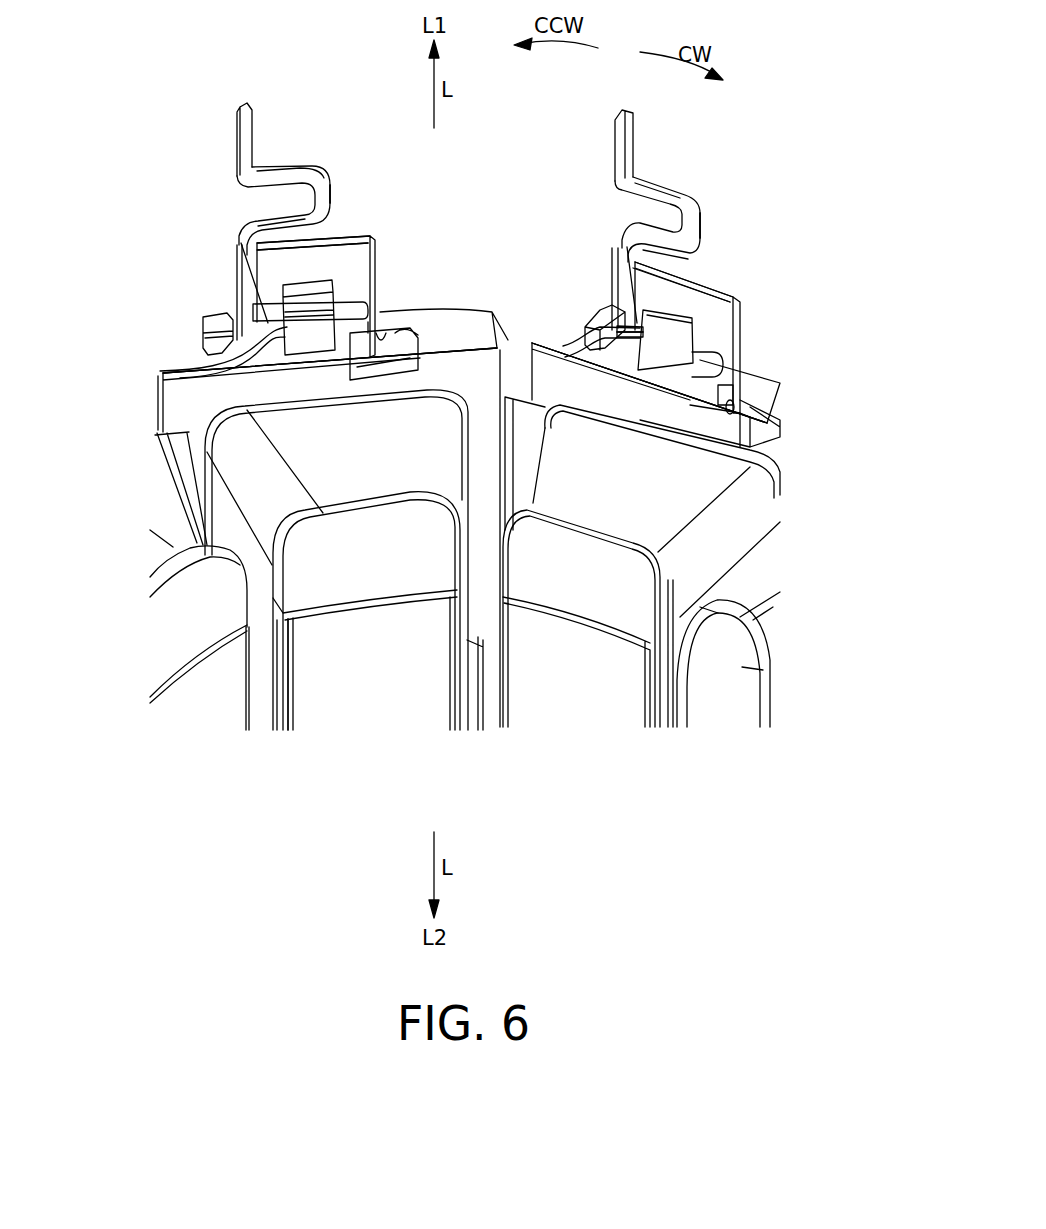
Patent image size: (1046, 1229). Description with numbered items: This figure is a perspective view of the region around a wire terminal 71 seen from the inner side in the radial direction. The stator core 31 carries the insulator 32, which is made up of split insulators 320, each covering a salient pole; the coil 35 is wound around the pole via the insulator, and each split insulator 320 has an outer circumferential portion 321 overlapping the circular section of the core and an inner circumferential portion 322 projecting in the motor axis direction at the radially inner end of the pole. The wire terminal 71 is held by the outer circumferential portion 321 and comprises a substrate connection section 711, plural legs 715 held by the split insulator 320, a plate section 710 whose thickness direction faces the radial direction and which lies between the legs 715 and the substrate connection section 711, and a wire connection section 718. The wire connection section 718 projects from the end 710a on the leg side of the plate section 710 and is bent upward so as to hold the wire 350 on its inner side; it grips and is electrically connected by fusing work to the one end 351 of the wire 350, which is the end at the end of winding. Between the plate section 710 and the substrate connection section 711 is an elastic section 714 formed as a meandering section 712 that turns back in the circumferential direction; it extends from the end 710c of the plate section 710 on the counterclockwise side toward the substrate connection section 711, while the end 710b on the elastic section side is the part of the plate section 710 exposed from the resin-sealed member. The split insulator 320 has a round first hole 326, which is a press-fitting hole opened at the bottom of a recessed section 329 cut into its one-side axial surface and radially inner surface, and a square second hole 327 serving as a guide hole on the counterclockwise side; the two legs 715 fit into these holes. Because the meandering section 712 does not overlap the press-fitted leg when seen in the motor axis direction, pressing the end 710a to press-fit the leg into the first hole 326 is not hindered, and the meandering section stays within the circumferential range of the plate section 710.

The substrate connection section 711 is at (242, 132).
The elastic section 714 is at (328, 192).
The meandering section 712 is at (515, 211).
The wire terminal 71 is at (367, 231).
The plate section 710 is at (360, 265).
The end on the leg side of the plate section 710a is at (337, 243).
The end on the elastic section side of the plate section 710b is at (238, 236).
The end on the other circumferential side of the plate section 710c is at (238, 273).
The leg 715 is at (778, 356).
The wire connection section 718 is at (313, 330).
The one end of the wire 351 is at (366, 312).
The first hole 326 is at (381, 343).
The recessed section 329 is at (464, 340).
The wire 350 is at (257, 340).
The insulator 32 is at (173, 397).
The split insulator 320 is at (465, 383).
The outer circumferential portion 321 is at (465, 343).
The second hole 327 is at (617, 363).
The coil 35 is at (293, 461).
The inner circumferential portion 322 is at (400, 530).
The stator core 31 is at (377, 710).